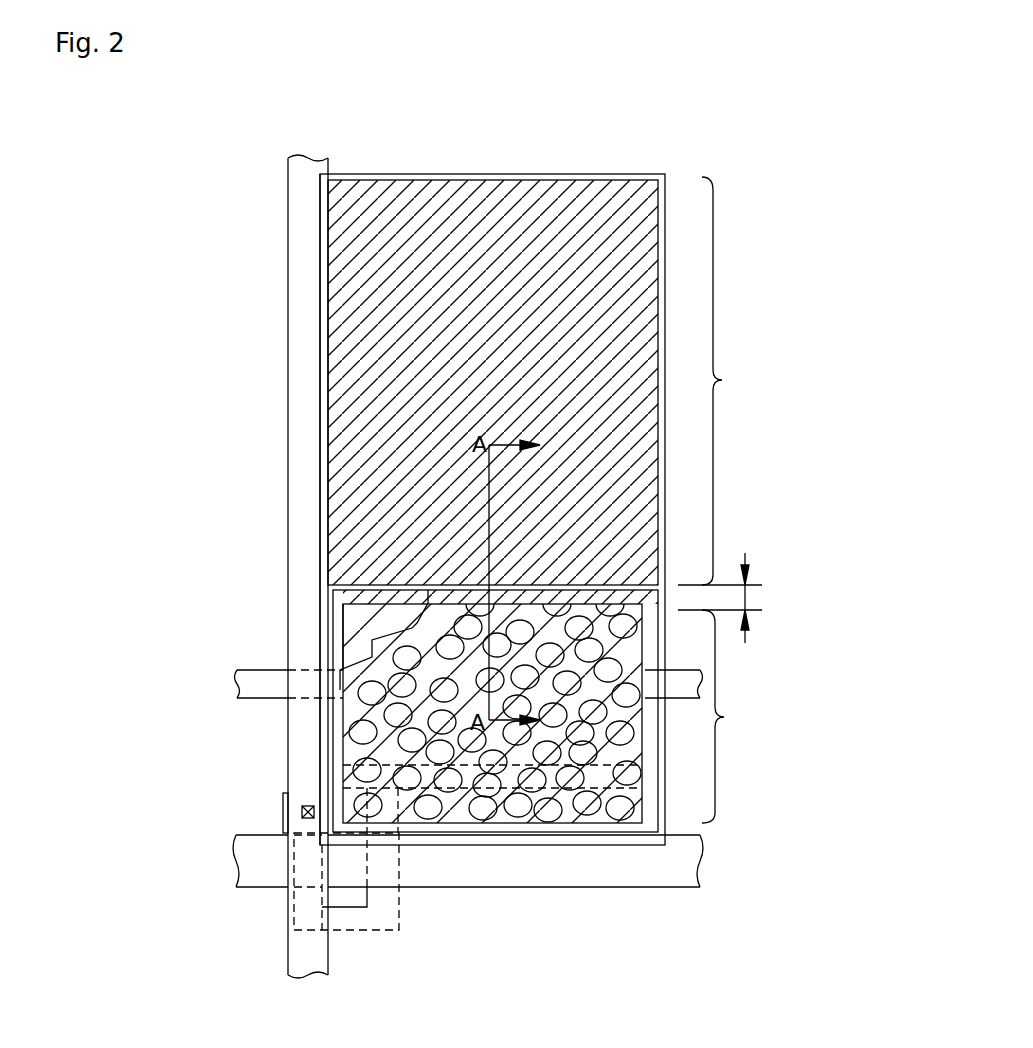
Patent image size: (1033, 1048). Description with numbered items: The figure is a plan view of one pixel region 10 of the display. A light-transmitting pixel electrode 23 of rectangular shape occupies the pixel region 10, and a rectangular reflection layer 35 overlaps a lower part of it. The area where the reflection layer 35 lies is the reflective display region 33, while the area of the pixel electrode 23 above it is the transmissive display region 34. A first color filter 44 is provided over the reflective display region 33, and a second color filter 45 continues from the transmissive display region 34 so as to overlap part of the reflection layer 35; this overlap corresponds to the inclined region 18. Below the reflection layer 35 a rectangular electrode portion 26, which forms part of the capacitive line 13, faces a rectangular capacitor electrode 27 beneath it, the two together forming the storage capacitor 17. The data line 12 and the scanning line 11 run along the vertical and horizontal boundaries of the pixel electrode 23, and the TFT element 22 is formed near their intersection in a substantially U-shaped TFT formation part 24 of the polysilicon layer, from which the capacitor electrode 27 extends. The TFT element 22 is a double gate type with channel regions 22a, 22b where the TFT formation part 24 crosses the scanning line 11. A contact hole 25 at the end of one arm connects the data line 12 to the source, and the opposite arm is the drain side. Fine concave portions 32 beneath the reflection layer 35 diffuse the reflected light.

The pixel region 10 is at (640, 165).
The scanning line 11 is at (670, 880).
The data line 12 is at (302, 440).
The capacitive line 13 is at (262, 690).
The storage capacitor 17 is at (398, 683).
The inclined region 18 is at (737, 598).
The TFT element 22 is at (345, 906).
The channel region 22a is at (375, 870).
The channel region 22b is at (308, 870).
The light-transmitting pixel electrode 23 is at (316, 278).
The TFT formation part 24 is at (367, 925).
The contact hole 25 is at (297, 810).
The electrode portion 26 is at (340, 648).
The capacitor electrode 27 is at (337, 612).
The fine concave portions 32 is at (588, 810).
The reflective display region 33 is at (728, 716).
The transmissive display region 34 is at (728, 381).
The reflection layer 35 is at (347, 650).
The first color filter 44 is at (347, 748).
The second color filter 45 is at (340, 219).